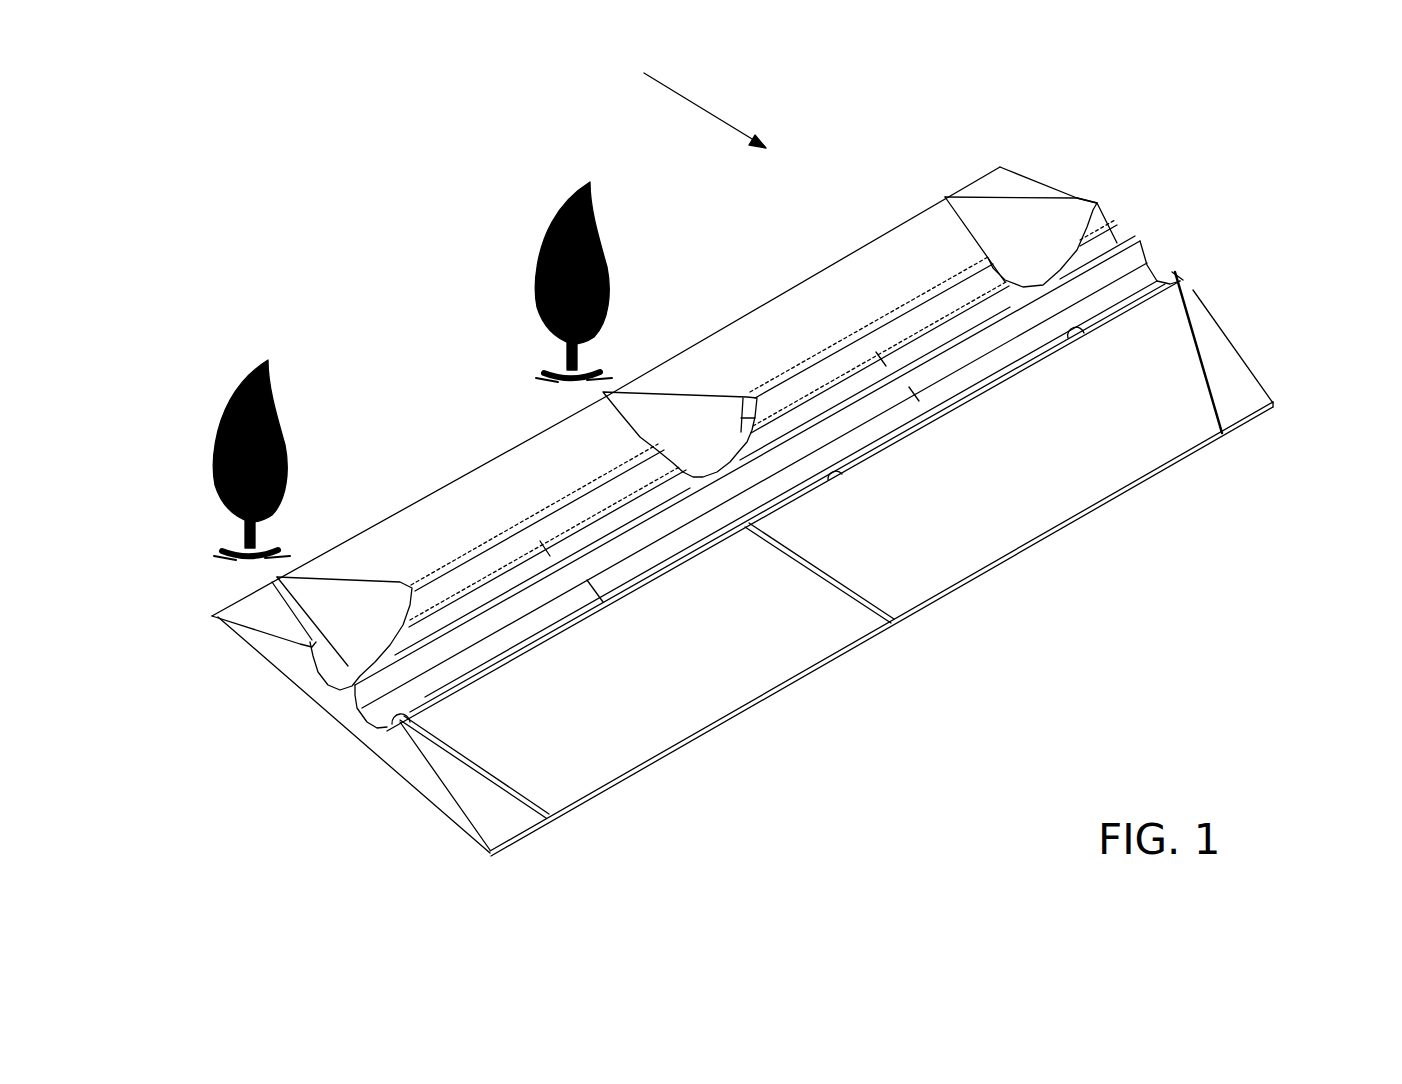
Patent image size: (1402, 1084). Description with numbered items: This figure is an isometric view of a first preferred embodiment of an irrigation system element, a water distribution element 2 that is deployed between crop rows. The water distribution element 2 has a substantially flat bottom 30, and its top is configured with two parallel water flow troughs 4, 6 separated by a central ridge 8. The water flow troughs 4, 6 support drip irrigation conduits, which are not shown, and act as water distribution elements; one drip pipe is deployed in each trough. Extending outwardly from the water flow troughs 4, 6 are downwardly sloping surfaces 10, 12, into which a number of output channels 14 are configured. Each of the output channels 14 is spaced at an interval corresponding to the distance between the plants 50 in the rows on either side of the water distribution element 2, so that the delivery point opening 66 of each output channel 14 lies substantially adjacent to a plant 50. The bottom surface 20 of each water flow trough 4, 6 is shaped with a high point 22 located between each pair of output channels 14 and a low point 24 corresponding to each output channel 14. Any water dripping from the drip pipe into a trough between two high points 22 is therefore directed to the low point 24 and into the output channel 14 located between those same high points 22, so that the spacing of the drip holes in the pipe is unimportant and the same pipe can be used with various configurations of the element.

The water distribution element 2 is at (667, 102).
The water flow trough 4 is at (1111, 217).
The water flow trough 6 is at (1167, 260).
The central ridge 8 is at (1133, 237).
The downwardly sloping surface 10 is at (825, 298).
The downwardly sloping surface 12 is at (1008, 452).
The output channel 14 is at (1015, 223).
The bottom surface 20 is at (378, 735).
The high point 22 is at (880, 355).
The low point 24 is at (1100, 318).
The flat bottom 30 is at (413, 787).
The plant 50 is at (556, 215).
The delivery point opening 66 is at (948, 196).